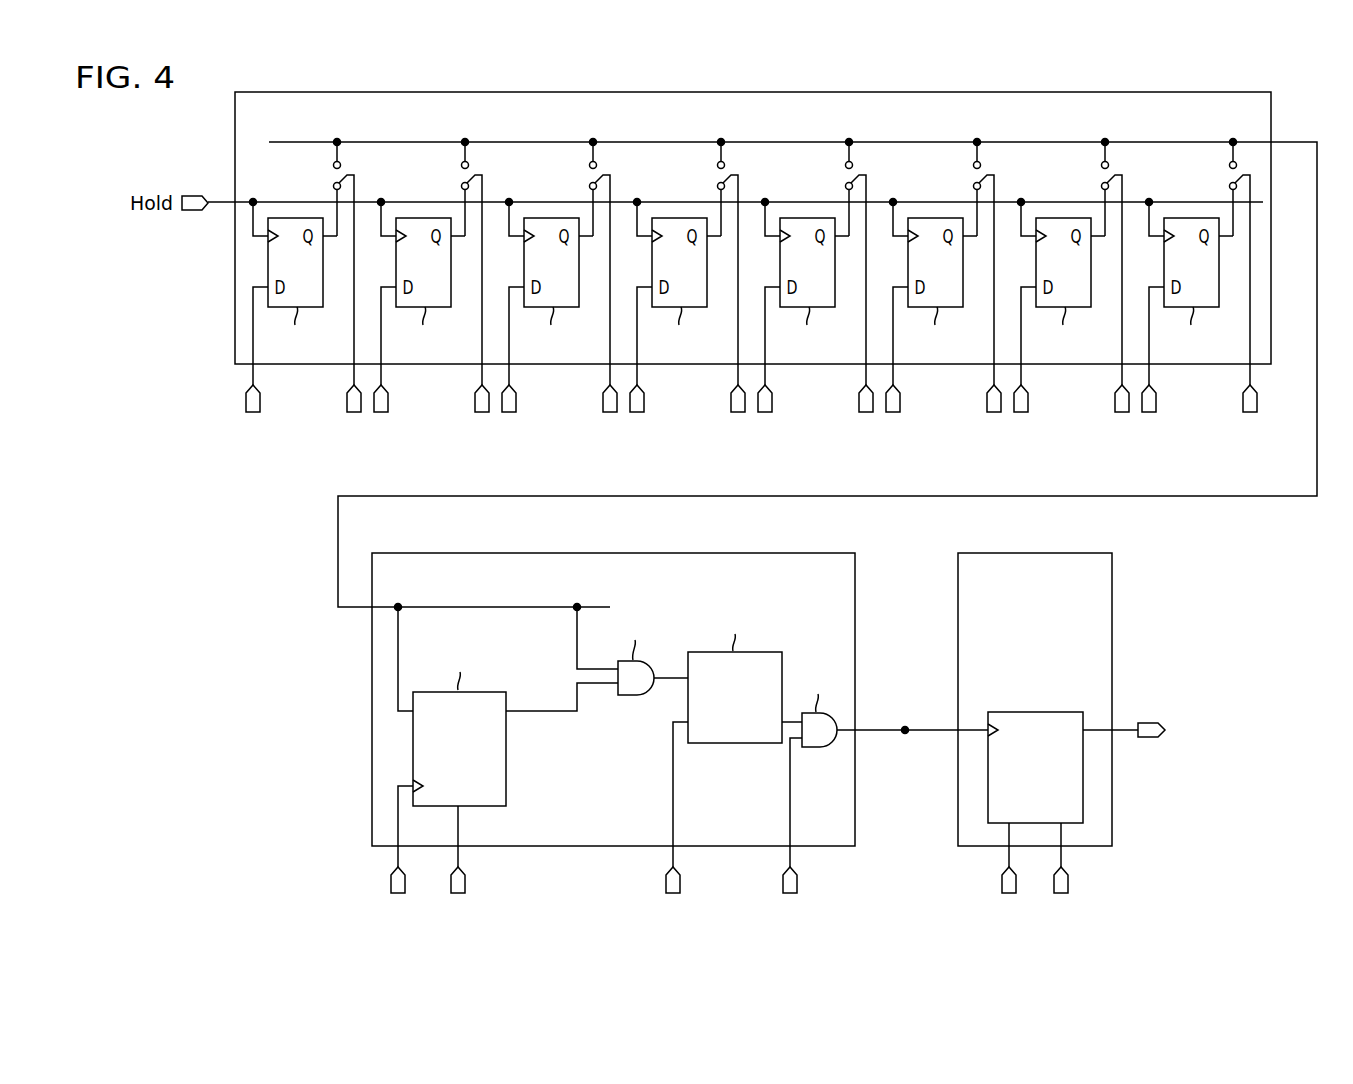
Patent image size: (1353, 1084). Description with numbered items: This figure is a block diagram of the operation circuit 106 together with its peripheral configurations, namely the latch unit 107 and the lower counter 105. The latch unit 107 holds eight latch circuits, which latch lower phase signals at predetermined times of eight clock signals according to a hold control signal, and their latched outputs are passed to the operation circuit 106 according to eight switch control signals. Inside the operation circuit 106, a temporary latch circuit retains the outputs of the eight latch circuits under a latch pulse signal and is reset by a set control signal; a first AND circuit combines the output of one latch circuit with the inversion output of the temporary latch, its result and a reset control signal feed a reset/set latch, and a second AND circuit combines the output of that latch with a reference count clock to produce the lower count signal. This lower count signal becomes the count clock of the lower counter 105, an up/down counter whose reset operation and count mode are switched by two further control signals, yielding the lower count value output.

The lower counter 105 is at (1050, 553).
The operation circuit 106 is at (614, 553).
The latch unit 107 is at (757, 92).